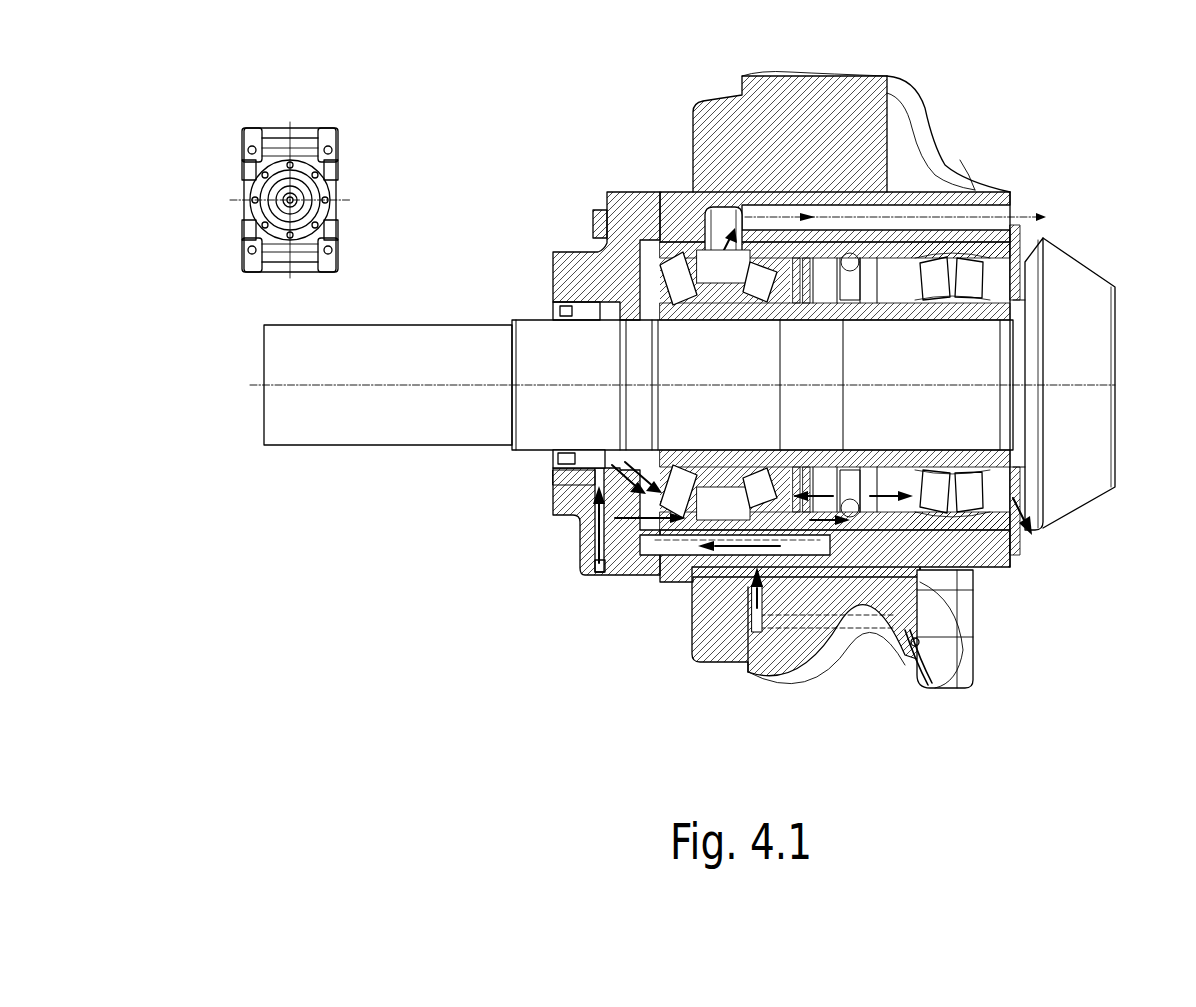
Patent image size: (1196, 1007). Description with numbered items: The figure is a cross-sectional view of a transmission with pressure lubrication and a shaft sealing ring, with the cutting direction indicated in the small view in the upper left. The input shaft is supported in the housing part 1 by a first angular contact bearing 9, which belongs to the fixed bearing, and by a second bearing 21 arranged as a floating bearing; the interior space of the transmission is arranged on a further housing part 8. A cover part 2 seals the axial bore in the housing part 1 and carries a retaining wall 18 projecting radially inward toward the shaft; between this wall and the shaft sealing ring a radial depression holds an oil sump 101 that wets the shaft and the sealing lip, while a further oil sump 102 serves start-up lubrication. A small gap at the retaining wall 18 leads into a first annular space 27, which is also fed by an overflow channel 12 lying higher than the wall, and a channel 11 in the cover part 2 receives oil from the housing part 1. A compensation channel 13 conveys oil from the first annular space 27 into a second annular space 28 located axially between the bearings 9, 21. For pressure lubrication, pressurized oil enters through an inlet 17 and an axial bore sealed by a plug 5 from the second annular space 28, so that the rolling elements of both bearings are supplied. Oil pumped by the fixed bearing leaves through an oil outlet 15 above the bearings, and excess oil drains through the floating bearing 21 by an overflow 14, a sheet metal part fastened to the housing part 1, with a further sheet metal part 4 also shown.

The housing part 1 is at (340, 128).
The cover part 2 is at (590, 272).
The sheet metal part 4 is at (1013, 500).
The first plug 5 is at (947, 687).
The housing part 8 is at (300, 150).
The bearing 9 is at (640, 573).
The channel 11 is at (585, 540).
The overflow channel 12 is at (555, 518).
The compensation channel 13 is at (672, 560).
The overflow 14 is at (1030, 498).
The oil outlet 15 is at (762, 212).
The inlet for pressurized oil 17 is at (880, 627).
The retaining wall 18 is at (556, 483).
The bearing 21 is at (986, 276).
The first annular space 27 is at (596, 572).
The second annular space 28 is at (937, 560).
The oil sump for shaft sealing ring 101 is at (582, 457).
The oil sump for start-up lubrication 102 is at (890, 513).